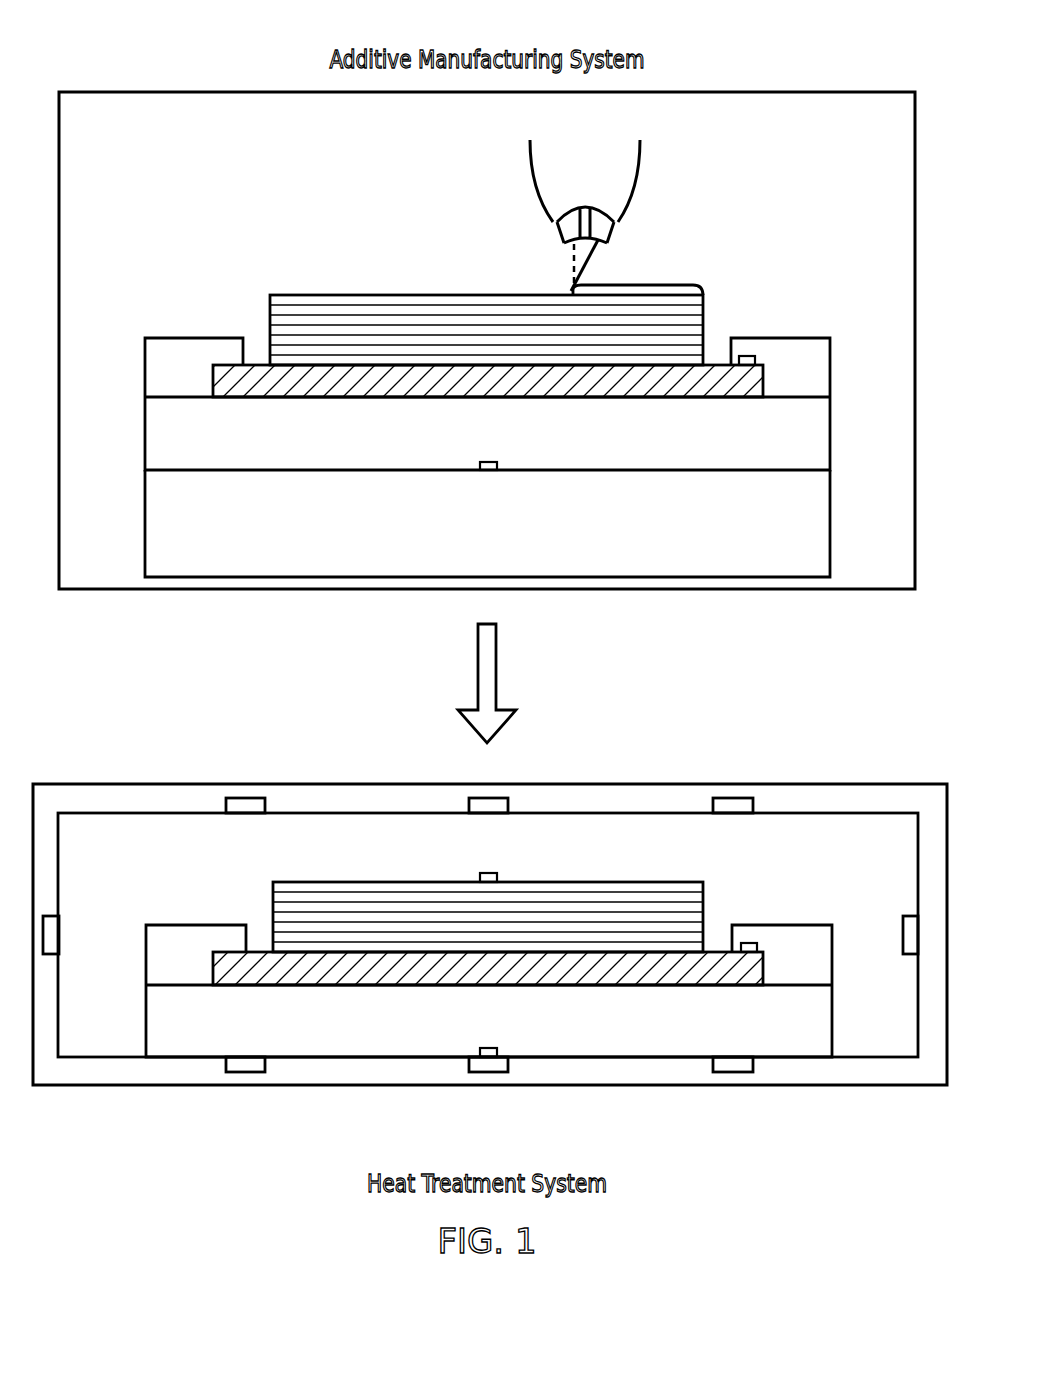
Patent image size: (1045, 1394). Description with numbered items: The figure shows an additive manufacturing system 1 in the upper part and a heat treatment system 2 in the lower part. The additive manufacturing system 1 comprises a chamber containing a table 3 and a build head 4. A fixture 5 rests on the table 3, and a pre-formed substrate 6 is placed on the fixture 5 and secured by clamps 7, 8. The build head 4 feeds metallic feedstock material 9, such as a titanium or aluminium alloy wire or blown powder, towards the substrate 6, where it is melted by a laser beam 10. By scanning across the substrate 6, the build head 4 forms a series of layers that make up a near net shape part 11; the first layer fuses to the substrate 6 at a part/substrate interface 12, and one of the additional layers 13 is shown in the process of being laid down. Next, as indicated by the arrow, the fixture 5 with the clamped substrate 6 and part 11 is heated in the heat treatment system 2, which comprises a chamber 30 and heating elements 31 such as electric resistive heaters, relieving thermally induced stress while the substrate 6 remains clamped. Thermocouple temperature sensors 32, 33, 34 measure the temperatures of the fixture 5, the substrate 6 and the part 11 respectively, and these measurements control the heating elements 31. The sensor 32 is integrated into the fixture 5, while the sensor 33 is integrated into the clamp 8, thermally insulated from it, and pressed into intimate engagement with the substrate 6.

The additive manufacturing system 1 is at (748, 58).
The heat treatment system 2 is at (748, 760).
The table 3 is at (168, 553).
The build head 4 is at (533, 170).
The fixture 5 is at (160, 453).
The substrate 6 is at (262, 362).
The clamp 7 is at (160, 382).
The clamp 8 is at (790, 350).
The metallic feedstock material 9 is at (600, 260).
The laser beam 10 is at (568, 270).
The near net shape part 11 is at (395, 298).
The part/substrate interface 12 is at (366, 368).
The additional layer 13 is at (680, 285).
The chamber 30 is at (146, 838).
The heating elements 31 is at (250, 814).
The thermocouple temperature sensor 32 is at (488, 1073).
The thermocouple temperature sensor 33 is at (748, 943).
The thermocouple temperature sensor 34 is at (490, 872).